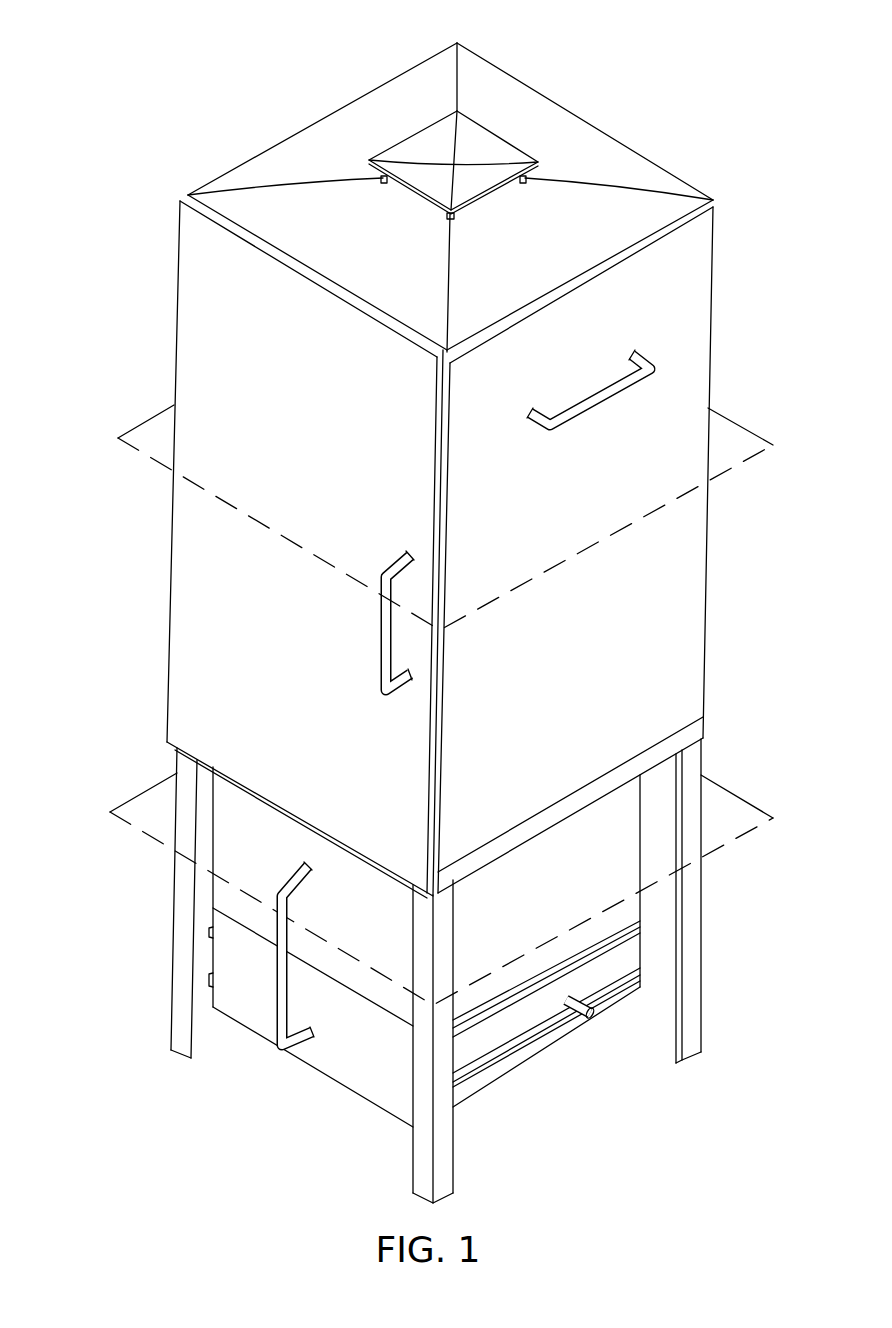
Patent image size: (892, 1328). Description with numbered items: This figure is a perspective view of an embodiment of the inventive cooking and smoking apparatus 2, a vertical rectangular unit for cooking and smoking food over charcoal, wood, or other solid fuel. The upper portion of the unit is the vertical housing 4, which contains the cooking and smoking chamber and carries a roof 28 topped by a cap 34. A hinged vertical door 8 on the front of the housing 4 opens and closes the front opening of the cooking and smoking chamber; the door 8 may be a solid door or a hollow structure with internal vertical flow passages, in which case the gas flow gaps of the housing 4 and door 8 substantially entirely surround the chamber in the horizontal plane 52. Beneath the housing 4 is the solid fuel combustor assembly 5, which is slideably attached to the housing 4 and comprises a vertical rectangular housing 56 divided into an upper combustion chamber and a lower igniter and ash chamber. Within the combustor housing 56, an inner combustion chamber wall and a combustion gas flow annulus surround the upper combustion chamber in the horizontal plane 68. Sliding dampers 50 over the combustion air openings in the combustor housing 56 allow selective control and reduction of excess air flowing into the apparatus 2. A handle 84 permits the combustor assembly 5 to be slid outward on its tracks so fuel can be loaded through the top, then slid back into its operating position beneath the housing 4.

The cooking and smoking apparatus 2 is at (312, 62).
The roof 28 is at (543, 110).
The vent cap 34 is at (418, 176).
The hinged vertical door 8 is at (180, 322).
The vertical housing 4 is at (703, 327).
The vertical rectangular housing 56 is at (253, 818).
The horizontal plane 52 is at (283, 540).
The horizontal plane 68 is at (125, 827).
The solid fuel combustor assembly 5 is at (355, 1095).
The sliding dampers 50 is at (540, 1015).
The handle 84 is at (252, 1027).